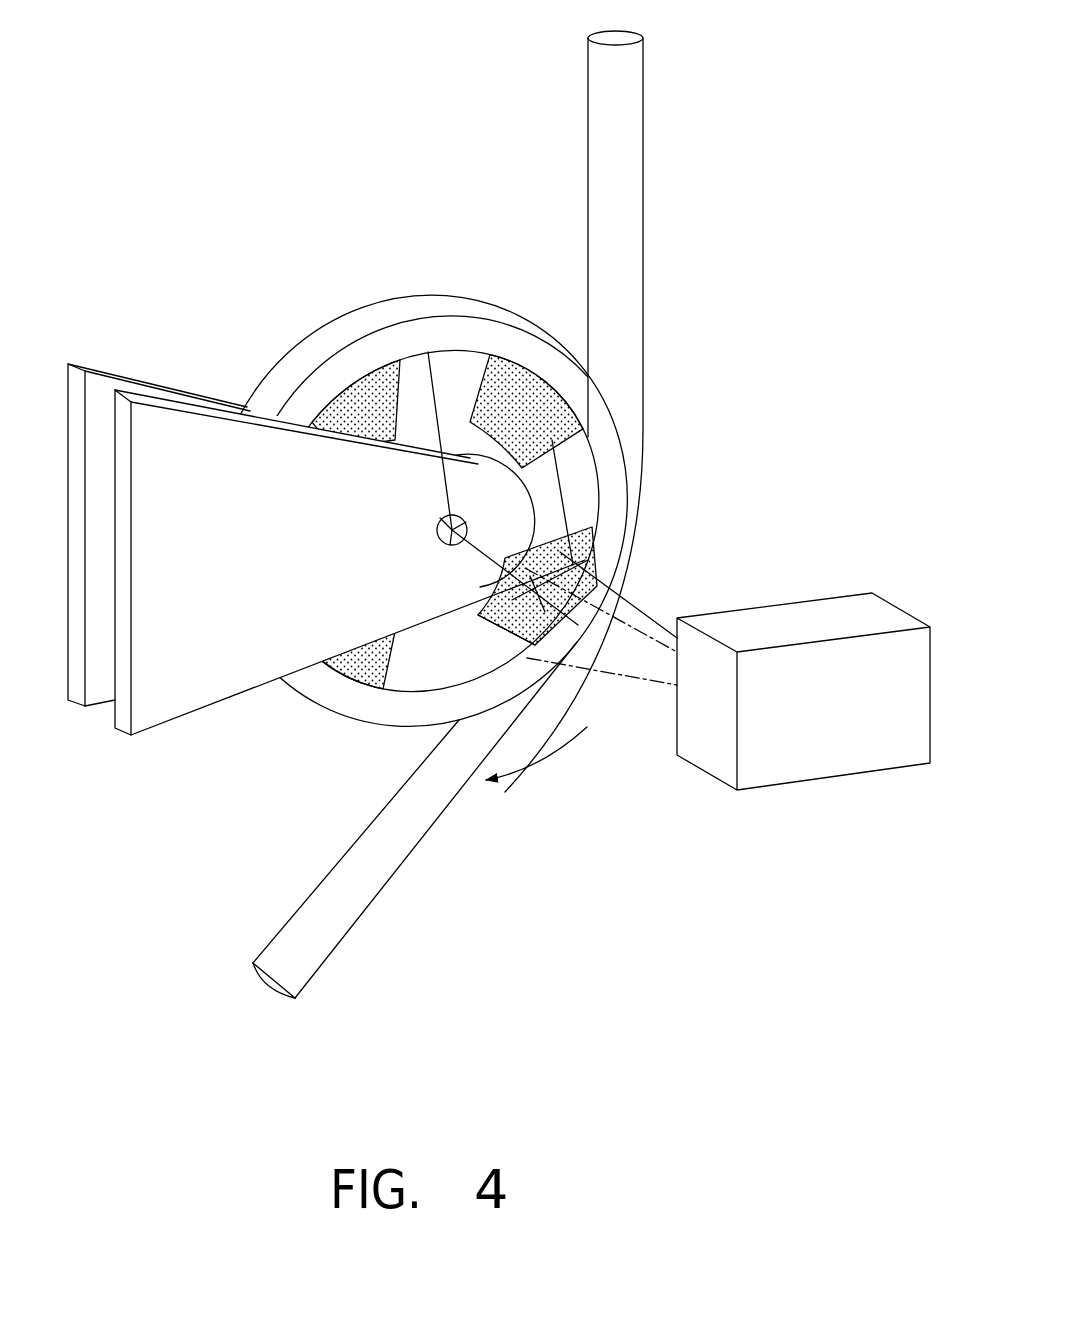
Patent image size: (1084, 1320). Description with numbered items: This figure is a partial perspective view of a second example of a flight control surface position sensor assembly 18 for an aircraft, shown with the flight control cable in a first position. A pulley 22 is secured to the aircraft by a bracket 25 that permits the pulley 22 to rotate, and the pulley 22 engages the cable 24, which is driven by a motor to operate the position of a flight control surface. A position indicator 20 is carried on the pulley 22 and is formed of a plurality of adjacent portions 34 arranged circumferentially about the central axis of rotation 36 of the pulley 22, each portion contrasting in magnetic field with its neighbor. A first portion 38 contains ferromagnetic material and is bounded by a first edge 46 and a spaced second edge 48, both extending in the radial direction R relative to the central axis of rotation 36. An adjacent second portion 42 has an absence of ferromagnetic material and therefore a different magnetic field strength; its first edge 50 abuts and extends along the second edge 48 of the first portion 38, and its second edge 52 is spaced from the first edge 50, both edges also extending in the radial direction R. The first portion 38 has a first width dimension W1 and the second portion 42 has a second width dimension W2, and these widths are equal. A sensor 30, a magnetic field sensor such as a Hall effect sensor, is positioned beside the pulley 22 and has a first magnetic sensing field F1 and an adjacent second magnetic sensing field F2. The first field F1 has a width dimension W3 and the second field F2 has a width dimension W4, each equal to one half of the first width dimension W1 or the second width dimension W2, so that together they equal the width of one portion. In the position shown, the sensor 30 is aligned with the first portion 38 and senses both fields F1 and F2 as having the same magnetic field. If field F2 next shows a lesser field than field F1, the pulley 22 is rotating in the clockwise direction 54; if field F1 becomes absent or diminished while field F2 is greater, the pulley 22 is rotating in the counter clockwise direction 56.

The flight control surface position sensor assembly 18 is at (692, 348).
The position indicator 20 is at (584, 511).
The pulley 22 is at (618, 466).
The cable 24 is at (628, 205).
The bracket 25 is at (148, 422).
The sensor 30 is at (807, 755).
The plurality of adjacent portions 34 is at (470, 362).
The central axis of rotation 36 is at (488, 563).
The first portion 38 is at (476, 635).
The second portion 42 is at (578, 495).
The first edge 46 is at (485, 612).
The second edge 48 is at (582, 565).
The first edge 50 is at (540, 548).
The second edge 52 is at (520, 492).
The clockwise direction 54 is at (542, 758).
The counter clockwise direction 56 is at (434, 222).
The radial direction R is at (428, 378).
The first width dimension W1 is at (545, 680).
The second width dimension W2 is at (604, 428).
The width dimension W3 is at (472, 600).
The width dimension W4 is at (505, 570).
The first magnetic sensing field F1 is at (611, 668).
The second magnetic sensing field F2 is at (640, 633).